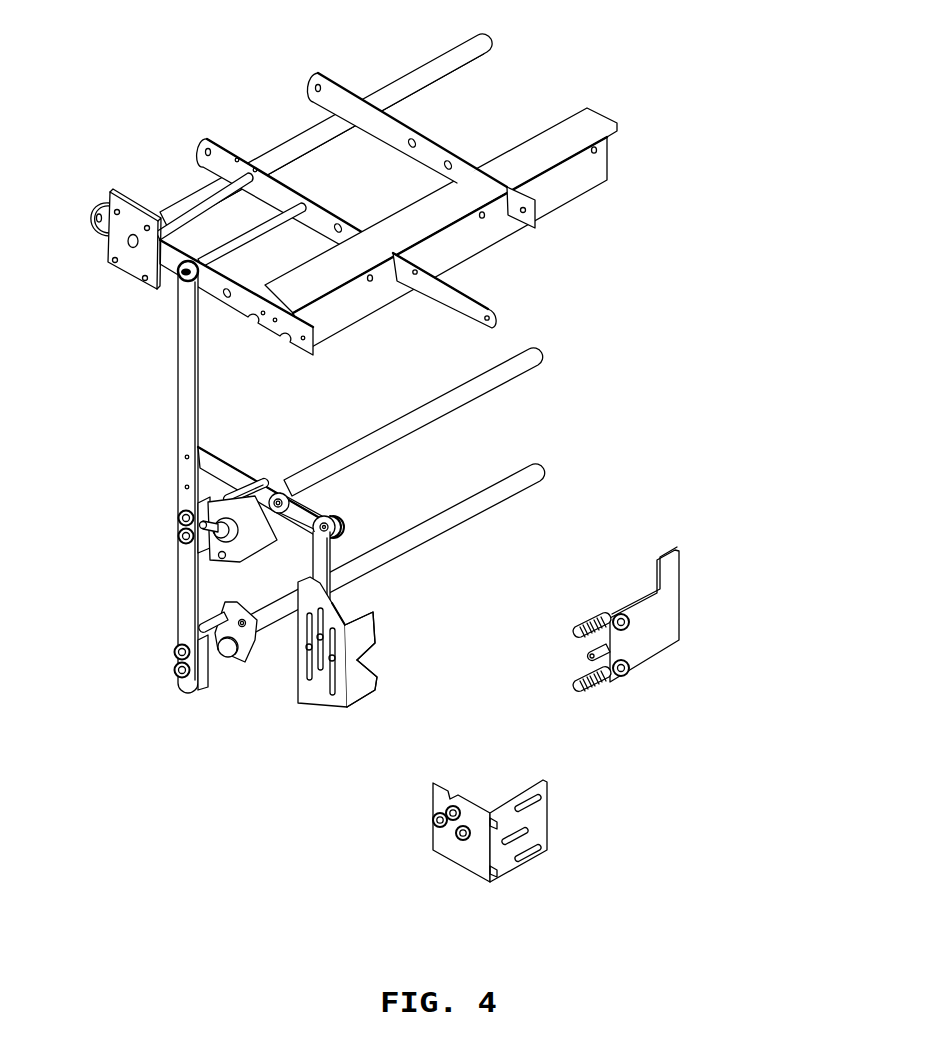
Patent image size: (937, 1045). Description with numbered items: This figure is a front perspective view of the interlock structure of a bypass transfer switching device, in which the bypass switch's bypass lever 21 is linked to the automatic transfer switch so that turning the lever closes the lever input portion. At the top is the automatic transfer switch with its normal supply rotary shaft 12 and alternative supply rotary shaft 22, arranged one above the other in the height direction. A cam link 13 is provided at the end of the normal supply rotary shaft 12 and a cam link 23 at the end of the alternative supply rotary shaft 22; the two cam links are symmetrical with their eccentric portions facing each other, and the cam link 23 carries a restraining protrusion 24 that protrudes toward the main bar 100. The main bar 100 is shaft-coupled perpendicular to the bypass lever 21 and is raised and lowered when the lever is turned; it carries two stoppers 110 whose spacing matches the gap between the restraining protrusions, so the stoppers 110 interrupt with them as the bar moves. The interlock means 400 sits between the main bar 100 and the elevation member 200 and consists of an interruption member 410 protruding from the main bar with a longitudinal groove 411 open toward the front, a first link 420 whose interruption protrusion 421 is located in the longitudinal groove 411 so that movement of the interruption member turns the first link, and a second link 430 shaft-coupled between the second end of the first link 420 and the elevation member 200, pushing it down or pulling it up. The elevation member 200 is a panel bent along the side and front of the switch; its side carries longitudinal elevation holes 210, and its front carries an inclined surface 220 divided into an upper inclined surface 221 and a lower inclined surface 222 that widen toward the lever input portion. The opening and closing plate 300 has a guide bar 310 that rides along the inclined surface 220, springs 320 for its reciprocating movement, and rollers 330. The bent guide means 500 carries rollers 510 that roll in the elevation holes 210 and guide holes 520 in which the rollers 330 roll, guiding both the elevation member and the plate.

The bypass lever 21 is at (277, 190).
The normal supply rotary shaft 12 is at (443, 400).
The alternative supply rotary shaft 22 is at (518, 477).
The main bar 100 is at (187, 382).
The stoppers 110 is at (180, 505).
The interlock means 400 is at (370, 497).
The interruption member 410 is at (213, 463).
The longitudinal groove 411 is at (231, 491).
The first link 420 is at (298, 507).
The interruption protrusion 421 is at (210, 528).
The second link 430 is at (323, 553).
The cam link 13 is at (238, 552).
The cam link 23 is at (224, 660).
The restraining protrusion 24 is at (212, 613).
The elevation member 200 is at (386, 676).
The elevation hole 210 is at (331, 682).
The inclined surface 220 is at (439, 659).
The upper inclined surface 221 is at (368, 637).
The lower inclined surface 222 is at (370, 673).
The opening and closing plate 300 is at (679, 653).
The guide bar 310 is at (617, 636).
The springs 320 is at (592, 690).
The rollers 330 is at (618, 616).
The guide means 500 is at (485, 862).
The rollers 510 is at (456, 840).
The guide holes 520 is at (541, 841).